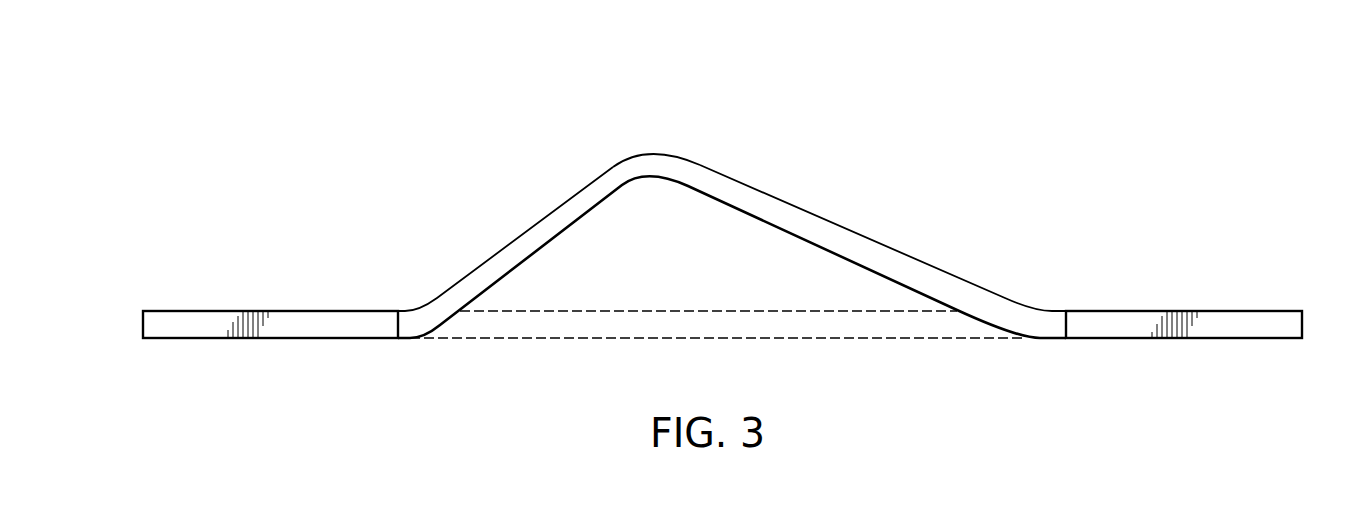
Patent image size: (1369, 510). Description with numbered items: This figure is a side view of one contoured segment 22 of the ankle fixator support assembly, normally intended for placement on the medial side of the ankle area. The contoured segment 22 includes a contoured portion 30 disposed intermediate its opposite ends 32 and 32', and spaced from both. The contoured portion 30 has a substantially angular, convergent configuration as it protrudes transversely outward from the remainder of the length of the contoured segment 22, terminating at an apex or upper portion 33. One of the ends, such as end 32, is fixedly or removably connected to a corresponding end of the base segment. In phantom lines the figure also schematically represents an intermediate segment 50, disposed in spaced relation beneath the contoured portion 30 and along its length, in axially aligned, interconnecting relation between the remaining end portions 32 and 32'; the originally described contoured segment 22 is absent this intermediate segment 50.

The contoured segment 22 is at (1006, 251).
The contoured portion 30 is at (753, 163).
The apex 33 is at (655, 150).
The end 32 is at (251, 378).
The opposite end 32' is at (1203, 377).
The intermediate segment 50 is at (541, 338).